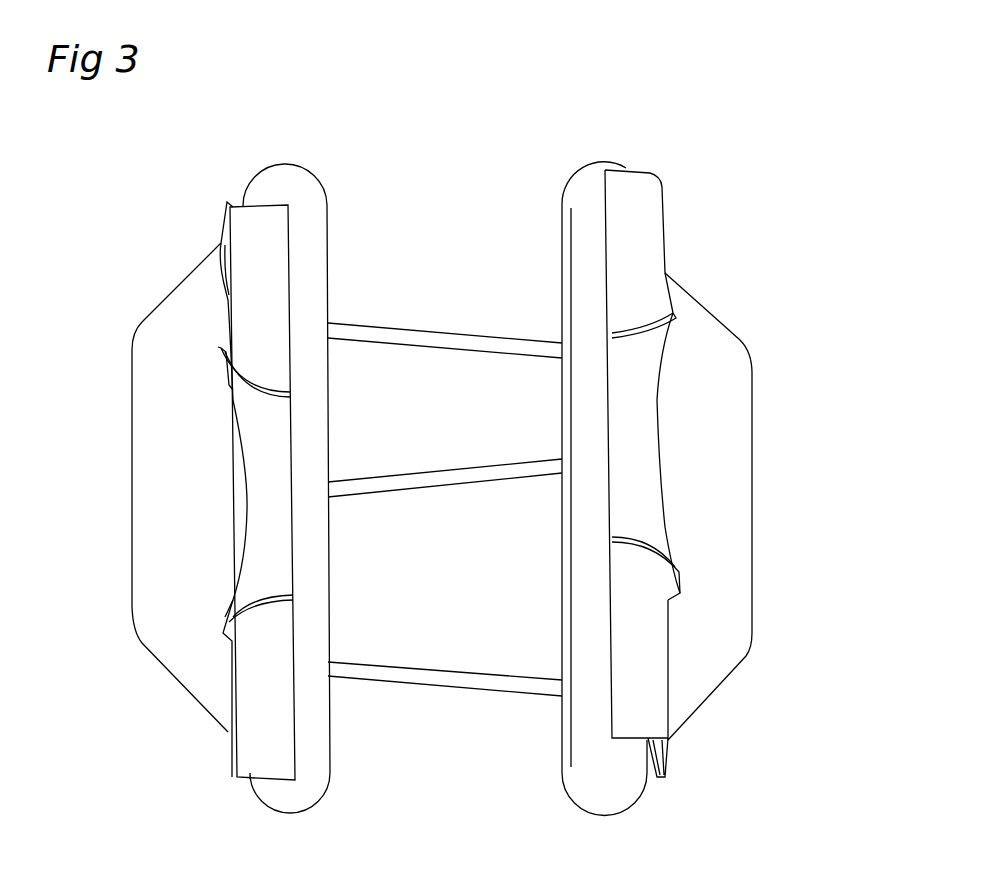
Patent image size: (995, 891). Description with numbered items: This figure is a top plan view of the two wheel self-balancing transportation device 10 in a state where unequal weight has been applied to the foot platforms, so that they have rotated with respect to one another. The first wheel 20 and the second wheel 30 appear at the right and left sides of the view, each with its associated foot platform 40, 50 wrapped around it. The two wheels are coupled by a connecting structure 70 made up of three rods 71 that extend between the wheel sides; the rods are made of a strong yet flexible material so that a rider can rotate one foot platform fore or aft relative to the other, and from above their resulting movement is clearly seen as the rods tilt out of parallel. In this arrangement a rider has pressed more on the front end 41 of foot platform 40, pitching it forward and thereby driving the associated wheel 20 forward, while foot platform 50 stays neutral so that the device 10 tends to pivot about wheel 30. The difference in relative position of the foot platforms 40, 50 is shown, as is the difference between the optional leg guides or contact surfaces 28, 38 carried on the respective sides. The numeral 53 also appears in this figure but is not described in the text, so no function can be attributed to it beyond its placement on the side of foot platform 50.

The two wheel self-balancing transportation device 10 is at (548, 100).
The first wheel 20 is at (633, 813).
The leg guide or contact surface 28 is at (667, 527).
The second wheel 30 is at (300, 817).
The leg guide or contact surface 38 is at (233, 547).
The foot platform 40 is at (735, 473).
The front end 41 is at (717, 323).
The foot platform 50 is at (159, 491).
The outer ring of left bracket 53 is at (177, 690).
The connecting structure 70 is at (445, 467).
The rods or shafts 71 is at (440, 297).